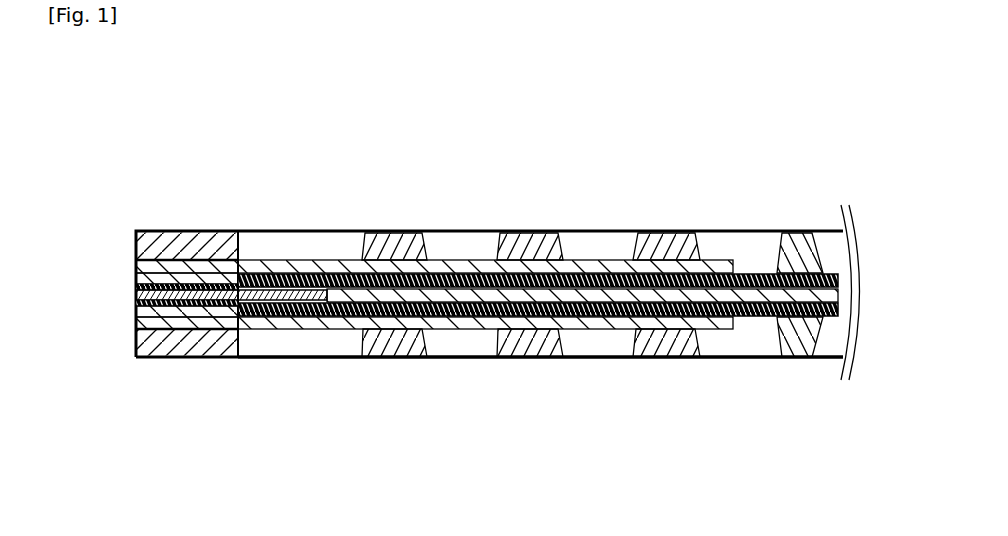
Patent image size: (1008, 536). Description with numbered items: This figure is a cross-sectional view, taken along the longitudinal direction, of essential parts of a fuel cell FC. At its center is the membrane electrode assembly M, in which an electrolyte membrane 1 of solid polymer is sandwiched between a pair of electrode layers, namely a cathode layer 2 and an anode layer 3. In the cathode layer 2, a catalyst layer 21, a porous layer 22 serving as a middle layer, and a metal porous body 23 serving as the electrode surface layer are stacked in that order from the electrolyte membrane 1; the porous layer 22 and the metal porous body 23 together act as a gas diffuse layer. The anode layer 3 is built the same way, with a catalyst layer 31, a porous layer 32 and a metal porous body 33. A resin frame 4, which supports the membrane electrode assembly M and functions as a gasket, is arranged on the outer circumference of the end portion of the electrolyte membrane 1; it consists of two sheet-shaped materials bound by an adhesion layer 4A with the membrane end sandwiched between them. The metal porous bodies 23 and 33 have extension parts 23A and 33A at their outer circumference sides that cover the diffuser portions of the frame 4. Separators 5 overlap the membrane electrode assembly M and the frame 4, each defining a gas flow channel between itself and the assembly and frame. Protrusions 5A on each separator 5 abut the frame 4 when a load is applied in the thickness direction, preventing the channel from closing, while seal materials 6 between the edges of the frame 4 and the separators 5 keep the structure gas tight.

The fuel cell FC is at (690, 178).
The membrane electrode assembly M is at (123, 260).
The electrolyte membrane 1 is at (311, 302).
The cathode layer 2 is at (125, 123).
The catalyst layer 21 is at (134, 272).
The porous layer 22 is at (183, 266).
The metal porous body 23 is at (222, 278).
The extension part 23A is at (275, 281).
The anode layer 3 is at (115, 475).
The catalyst layer 31 is at (135, 306).
The porous layer 32 is at (178, 322).
The metal porous body 33 is at (218, 311).
The extension part 33A is at (276, 312).
The frame 4 is at (632, 340).
The adhesion layer 4A is at (618, 292).
The separator 5 is at (598, 224).
The protrusion 5A is at (362, 243).
The seal material 6 is at (814, 250).